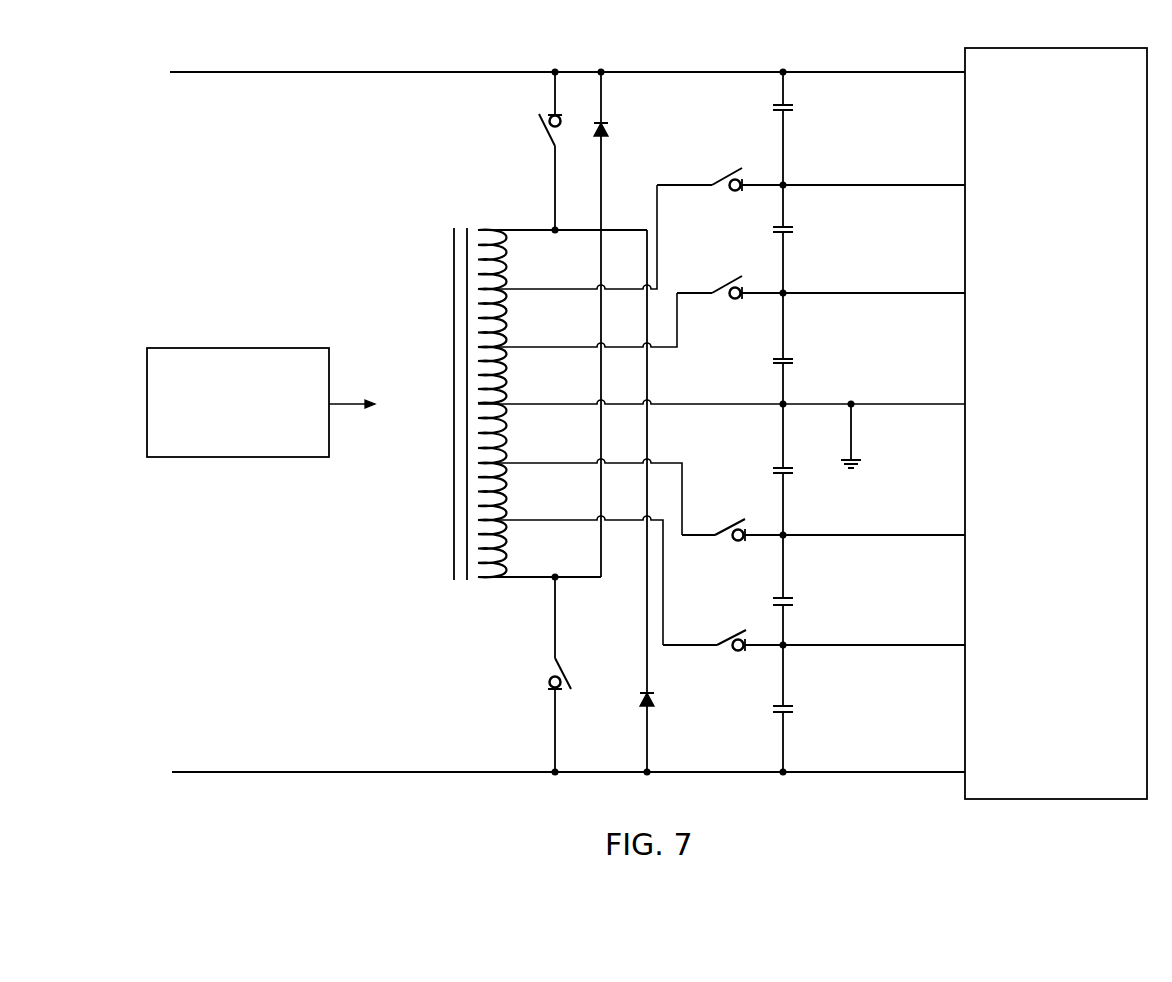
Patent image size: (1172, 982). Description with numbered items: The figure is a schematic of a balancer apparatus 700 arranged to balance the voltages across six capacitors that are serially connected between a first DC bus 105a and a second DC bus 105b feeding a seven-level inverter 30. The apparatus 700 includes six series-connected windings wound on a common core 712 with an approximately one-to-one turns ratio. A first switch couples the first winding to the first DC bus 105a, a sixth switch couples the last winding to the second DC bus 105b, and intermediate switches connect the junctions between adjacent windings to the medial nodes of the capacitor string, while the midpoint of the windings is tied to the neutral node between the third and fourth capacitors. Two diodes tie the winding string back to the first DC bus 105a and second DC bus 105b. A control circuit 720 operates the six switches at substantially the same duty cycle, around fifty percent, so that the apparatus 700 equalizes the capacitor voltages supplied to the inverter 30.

The first DC bus 105a is at (292, 73).
The second DC bus 105b is at (255, 772).
The 7-level inverter 30 is at (1055, 800).
The control circuit 720 is at (237, 348).
The balancer apparatus 700 is at (430, 800).
The common core 712 is at (454, 498).